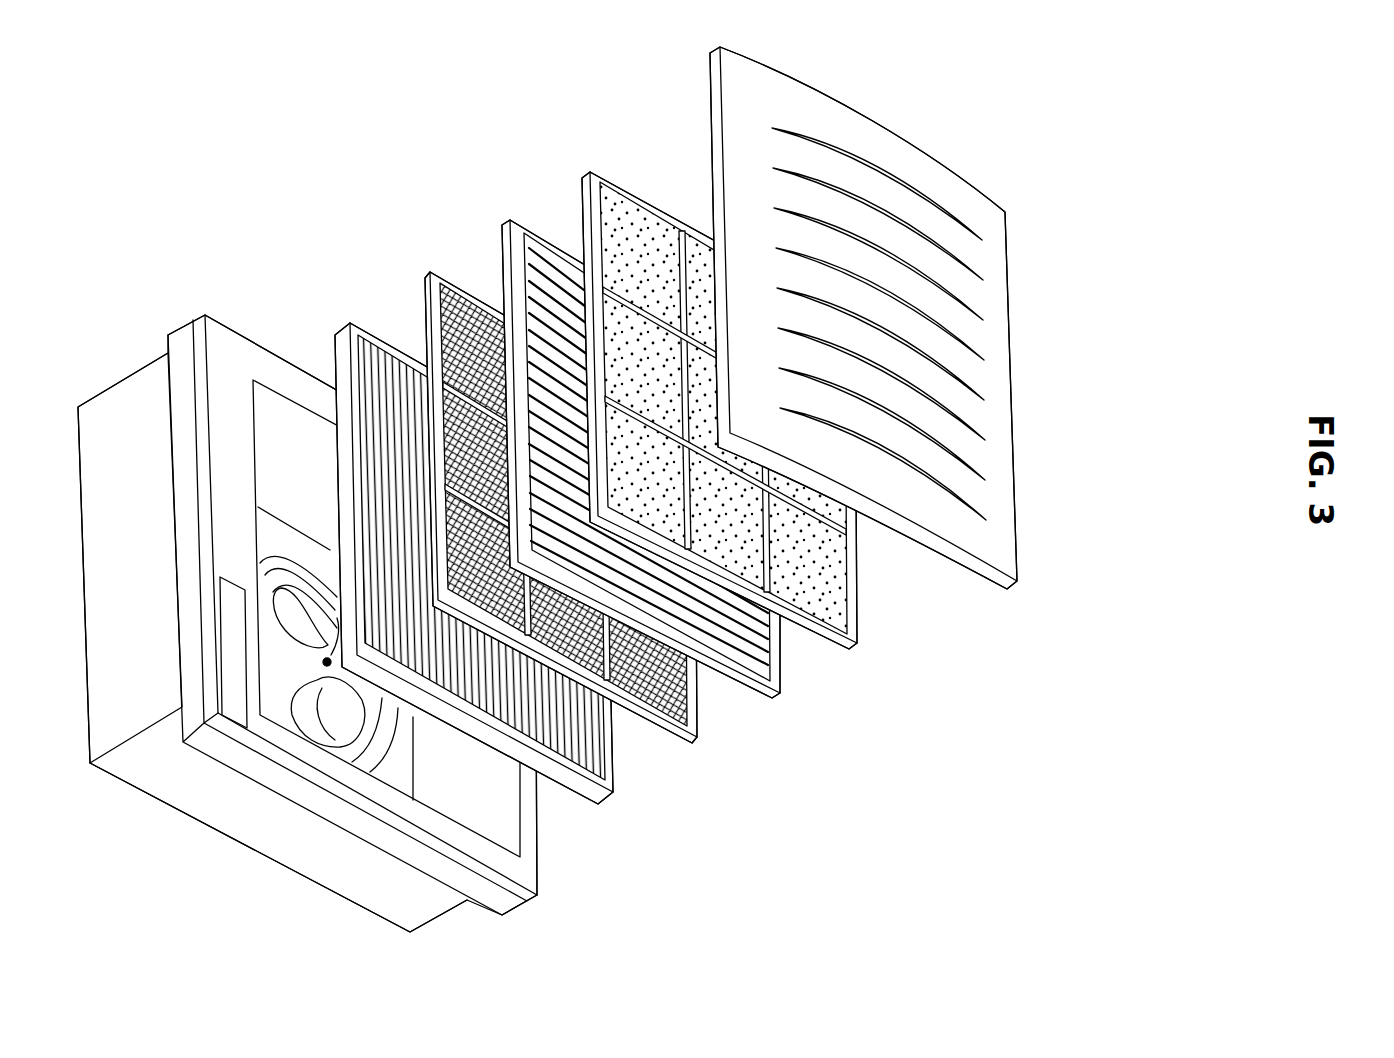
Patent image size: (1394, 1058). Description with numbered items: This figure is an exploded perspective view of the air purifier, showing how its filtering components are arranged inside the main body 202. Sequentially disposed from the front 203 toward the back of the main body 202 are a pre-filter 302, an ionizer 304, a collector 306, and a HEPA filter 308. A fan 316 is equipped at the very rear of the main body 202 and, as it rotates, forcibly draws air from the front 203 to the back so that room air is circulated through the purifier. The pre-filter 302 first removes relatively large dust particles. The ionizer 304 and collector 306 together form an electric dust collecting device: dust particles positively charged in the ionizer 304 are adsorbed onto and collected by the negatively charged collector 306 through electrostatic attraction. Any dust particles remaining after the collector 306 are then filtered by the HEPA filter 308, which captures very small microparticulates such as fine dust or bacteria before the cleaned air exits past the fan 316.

The main body 202 is at (365, 885).
The fan 316 is at (323, 727).
The HEPA filter 308 is at (600, 800).
The collector 306 is at (693, 743).
The ionizer 304 is at (767, 697).
The pre-filter 302 is at (857, 643).
The front 203 is at (1007, 432).